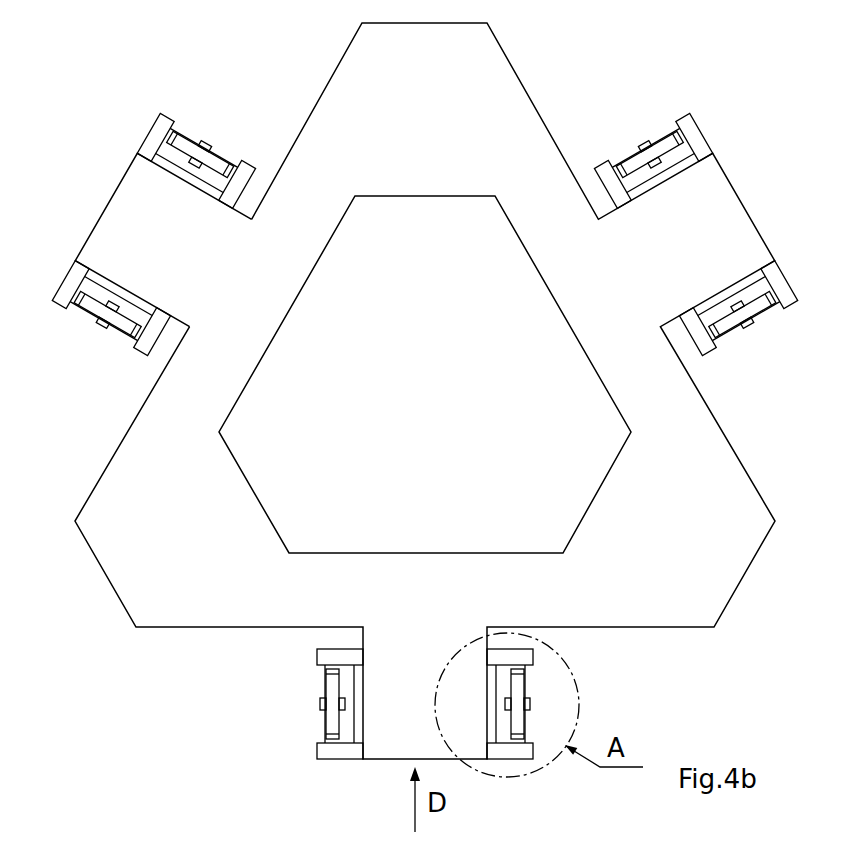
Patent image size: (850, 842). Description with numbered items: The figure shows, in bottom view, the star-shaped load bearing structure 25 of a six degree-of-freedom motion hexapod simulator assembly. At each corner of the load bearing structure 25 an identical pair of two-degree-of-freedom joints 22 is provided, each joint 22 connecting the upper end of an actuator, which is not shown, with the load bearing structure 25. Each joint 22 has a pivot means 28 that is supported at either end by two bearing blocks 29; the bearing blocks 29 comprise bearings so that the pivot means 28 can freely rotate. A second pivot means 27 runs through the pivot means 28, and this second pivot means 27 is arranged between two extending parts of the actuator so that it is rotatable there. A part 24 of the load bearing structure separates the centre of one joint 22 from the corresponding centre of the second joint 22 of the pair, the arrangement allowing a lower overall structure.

The two-degree-of-freedom joint 22 is at (217, 158).
The part of the load bearing structure 24 is at (135, 192).
The load bearing structure 25 is at (727, 440).
The second pivot means 27 is at (749, 326).
The pivot means 28 is at (632, 165).
The bearing block 29 is at (607, 167).